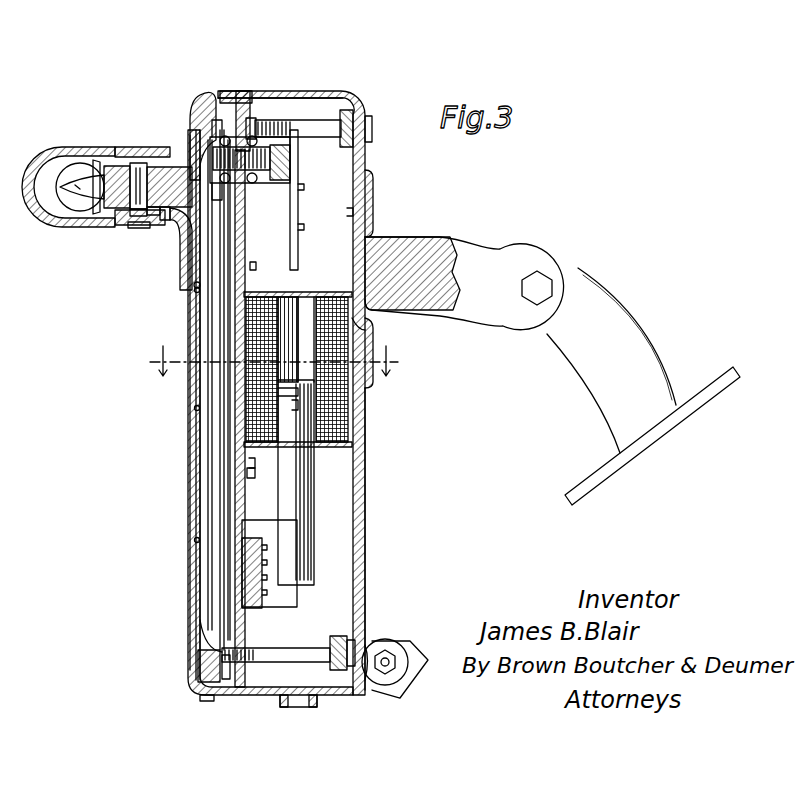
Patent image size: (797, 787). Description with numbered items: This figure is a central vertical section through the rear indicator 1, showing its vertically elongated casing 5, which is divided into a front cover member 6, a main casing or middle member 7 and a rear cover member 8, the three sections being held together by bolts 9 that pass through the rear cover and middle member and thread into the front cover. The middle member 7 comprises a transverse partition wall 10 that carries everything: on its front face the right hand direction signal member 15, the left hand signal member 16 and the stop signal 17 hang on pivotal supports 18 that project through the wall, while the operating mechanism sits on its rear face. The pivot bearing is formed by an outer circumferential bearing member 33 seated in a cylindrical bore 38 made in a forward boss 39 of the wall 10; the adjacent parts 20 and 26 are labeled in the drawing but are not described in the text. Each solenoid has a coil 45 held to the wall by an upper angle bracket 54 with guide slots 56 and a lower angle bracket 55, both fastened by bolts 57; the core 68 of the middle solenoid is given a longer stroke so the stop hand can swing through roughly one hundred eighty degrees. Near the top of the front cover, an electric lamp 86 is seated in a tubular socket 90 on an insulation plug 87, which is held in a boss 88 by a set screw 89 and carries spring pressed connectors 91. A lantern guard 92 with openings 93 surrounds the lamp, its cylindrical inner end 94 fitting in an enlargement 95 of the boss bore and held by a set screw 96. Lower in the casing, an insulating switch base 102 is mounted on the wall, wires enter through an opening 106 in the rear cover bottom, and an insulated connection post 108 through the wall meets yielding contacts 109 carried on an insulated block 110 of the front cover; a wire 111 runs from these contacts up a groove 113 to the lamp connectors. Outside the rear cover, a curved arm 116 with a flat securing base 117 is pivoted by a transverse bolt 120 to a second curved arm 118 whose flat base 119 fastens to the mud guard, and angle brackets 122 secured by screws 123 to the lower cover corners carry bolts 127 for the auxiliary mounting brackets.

The rear indicator 1 is at (268, 90).
The casing 5 is at (316, 90).
The front cover member 6 is at (196, 288).
The main casing or middle member 7 is at (246, 92).
The rear cover member 8 is at (360, 424).
The bolts 9 is at (366, 126).
The partition wall 10 is at (235, 327).
The right hand direction signal member 15 is at (222, 450).
The left hand signal member 16 is at (229, 472).
The stop signal 17 is at (210, 492).
The pivotal supports 18 is at (205, 132).
The shaft 20 is at (246, 172).
The wall offset 26 is at (360, 336).
The outer circumferential bearing member 33 is at (194, 284).
The cylindrical bore 38 is at (255, 185).
The boss 39 is at (258, 190).
The coil 45 is at (262, 318).
The upper angle bracket 54 is at (332, 310).
The lower angle bracket 55 is at (298, 382).
The guide slots 56 is at (306, 300).
The bolts 57 is at (258, 275).
The core 68 is at (311, 512).
The electric lamp 86 is at (78, 198).
The insulation plug 87 is at (182, 230).
The boss 88 is at (165, 168).
The set screw 89 is at (165, 222).
The tubular socket 90 is at (128, 224).
The spring pressed connectors 91 is at (137, 175).
The lantern guard 92 is at (40, 160).
The openings 93 is at (82, 162).
The cylindrical inner end 94 is at (140, 230).
The enlargement 95 is at (153, 216).
The set screw 96 is at (138, 218).
The switch base 102 is at (252, 605).
The opening 106 is at (285, 700).
The connection post 108 is at (220, 692).
The yielding contacts 109 is at (222, 666).
The insulated block 110 is at (198, 660).
The wire 111 is at (196, 419).
The groove 113 is at (192, 388).
The curved arm 116 is at (440, 245).
The securing base 117 is at (373, 182).
The second curved arm 118 is at (612, 322).
The flat base 119 is at (690, 396).
The transverse bolt 120 is at (536, 296).
The angle brackets 122 is at (372, 638).
The screws 123 is at (380, 682).
The bolts 127 is at (390, 664).